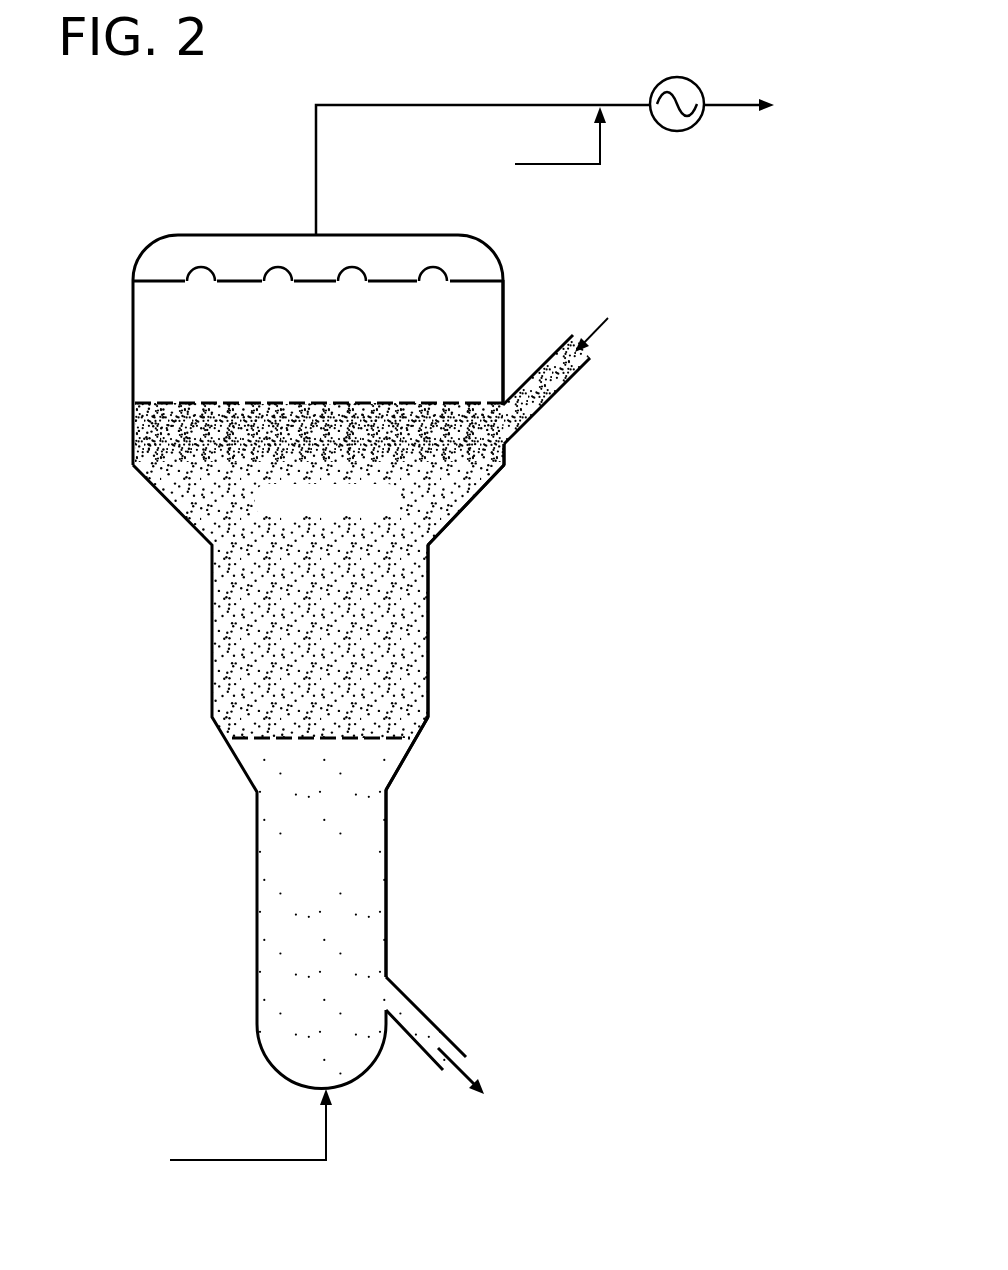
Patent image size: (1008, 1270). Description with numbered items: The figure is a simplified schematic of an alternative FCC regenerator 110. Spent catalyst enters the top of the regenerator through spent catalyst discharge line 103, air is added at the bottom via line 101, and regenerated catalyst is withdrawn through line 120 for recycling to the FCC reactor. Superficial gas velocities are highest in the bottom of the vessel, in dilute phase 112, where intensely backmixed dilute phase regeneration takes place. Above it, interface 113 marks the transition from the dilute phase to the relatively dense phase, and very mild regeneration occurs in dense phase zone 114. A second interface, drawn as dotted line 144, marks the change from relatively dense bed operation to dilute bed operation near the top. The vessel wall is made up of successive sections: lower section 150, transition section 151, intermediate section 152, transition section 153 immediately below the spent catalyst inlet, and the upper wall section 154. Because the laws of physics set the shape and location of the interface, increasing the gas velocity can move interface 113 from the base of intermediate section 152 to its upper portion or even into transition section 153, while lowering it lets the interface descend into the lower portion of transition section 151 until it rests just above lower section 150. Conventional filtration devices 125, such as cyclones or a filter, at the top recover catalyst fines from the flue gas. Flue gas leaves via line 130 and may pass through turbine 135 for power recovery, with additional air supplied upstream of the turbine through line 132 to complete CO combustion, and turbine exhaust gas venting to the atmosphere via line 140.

The air line 101 is at (230, 1162).
The spent catalyst discharge line 103 is at (530, 411).
The regenerator 110 is at (212, 630).
The dilute phase 112 is at (272, 912).
The interface 113 is at (375, 740).
The dense phase zone 114 is at (235, 562).
The regenerated catalyst line 120 is at (423, 1015).
The filtration devices 125 is at (172, 283).
The flue gas line 130 is at (495, 105).
The additional air line 132 is at (568, 163).
The turbine 135 is at (667, 128).
The turbine exhaust gas line 140 is at (730, 104).
The dotted line interface 144 is at (176, 413).
The lower section 150 is at (388, 910).
The transition section 151 is at (390, 785).
The intermediate section 152 is at (428, 676).
The transition section 153 is at (460, 508).
The upper vessel wall section 154 is at (505, 322).